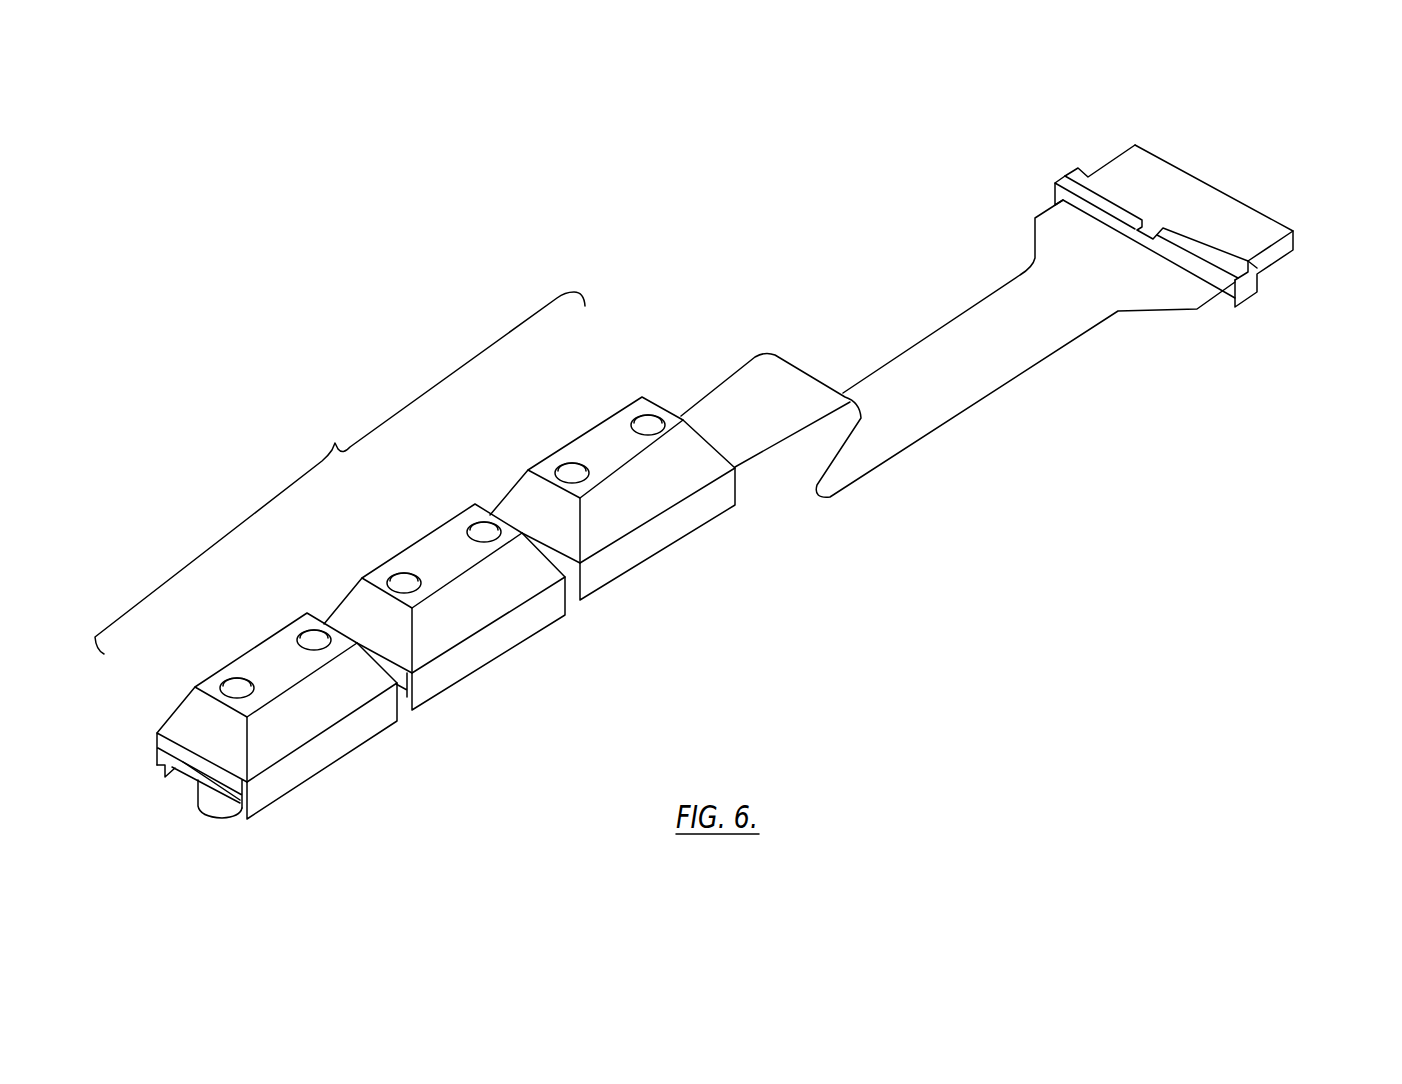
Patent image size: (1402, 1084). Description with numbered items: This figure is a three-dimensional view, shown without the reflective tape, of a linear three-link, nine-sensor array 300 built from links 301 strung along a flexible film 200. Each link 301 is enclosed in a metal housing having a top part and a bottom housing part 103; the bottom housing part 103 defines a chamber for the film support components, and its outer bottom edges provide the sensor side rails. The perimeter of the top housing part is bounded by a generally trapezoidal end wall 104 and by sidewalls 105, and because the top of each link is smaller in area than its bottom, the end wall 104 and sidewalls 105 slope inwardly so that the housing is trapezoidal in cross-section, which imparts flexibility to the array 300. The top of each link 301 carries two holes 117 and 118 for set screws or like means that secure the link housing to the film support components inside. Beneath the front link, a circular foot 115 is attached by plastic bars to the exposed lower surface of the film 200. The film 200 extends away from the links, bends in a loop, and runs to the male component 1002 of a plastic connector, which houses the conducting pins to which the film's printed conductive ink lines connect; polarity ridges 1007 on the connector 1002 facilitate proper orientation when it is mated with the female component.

The bottom housing part 103 is at (497, 642).
The trapezoidal end wall 104 is at (182, 728).
The sidewall 105 is at (286, 746).
The circular foot 115 is at (217, 819).
The hole 117 is at (586, 482).
The hole 118 is at (555, 467).
The film 200 is at (978, 413).
The linear array 300 is at (340, 473).
The link 301 is at (552, 613).
The male component of connector 1002 is at (1150, 219).
The polarity ridge 1007 is at (1060, 177).